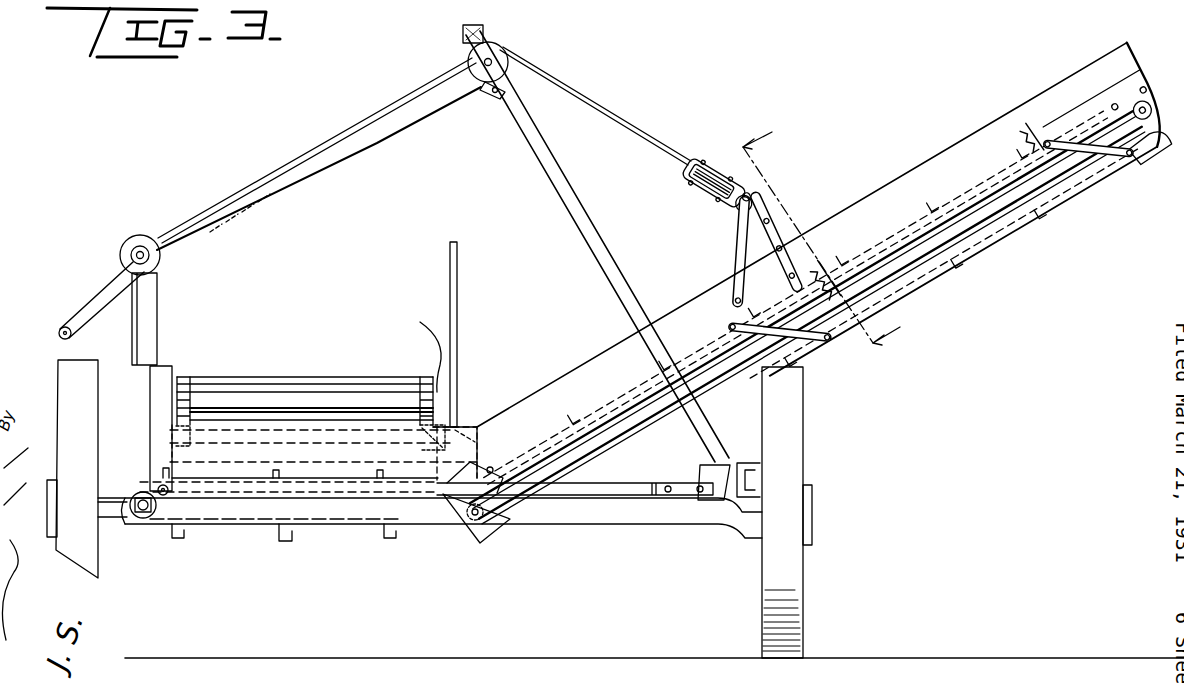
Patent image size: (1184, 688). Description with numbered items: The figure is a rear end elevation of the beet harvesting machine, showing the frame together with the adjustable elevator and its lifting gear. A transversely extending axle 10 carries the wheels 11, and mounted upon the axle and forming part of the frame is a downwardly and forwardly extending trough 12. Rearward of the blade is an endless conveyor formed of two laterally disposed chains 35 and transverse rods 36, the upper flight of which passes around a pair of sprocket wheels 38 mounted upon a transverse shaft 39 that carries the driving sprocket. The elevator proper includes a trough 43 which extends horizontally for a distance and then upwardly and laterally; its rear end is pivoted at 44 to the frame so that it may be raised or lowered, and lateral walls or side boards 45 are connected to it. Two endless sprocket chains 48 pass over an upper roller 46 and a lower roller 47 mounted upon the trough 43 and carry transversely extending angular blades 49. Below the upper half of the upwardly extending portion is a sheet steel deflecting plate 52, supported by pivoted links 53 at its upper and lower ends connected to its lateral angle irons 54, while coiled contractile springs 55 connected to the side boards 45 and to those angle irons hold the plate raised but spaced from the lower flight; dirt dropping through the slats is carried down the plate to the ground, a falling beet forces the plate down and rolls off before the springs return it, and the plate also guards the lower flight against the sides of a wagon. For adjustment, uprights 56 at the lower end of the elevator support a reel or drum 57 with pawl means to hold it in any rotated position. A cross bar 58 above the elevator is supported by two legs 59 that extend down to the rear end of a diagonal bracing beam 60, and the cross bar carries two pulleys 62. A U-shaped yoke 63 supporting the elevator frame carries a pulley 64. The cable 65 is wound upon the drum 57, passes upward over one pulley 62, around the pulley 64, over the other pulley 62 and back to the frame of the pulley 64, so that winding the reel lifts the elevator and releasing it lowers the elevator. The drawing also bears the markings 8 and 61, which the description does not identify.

The section line 8- 8 is at (813, 247).
The transversely extending axle 10 is at (120, 534).
The wheels 11 is at (787, 571).
The trough 12 is at (460, 326).
The chains 35 is at (416, 347).
The transverse rods 36 is at (350, 380).
The sprocket wheels 38 is at (196, 378).
The transverse shaft 39 is at (281, 406).
The elevator trough 43 is at (1108, 100).
The pivot 44 is at (160, 490).
The lateral walls 45 is at (876, 188).
The upper roller 46 is at (1118, 148).
The lower roller 47 is at (147, 526).
The endless sprocket chains 48 is at (359, 527).
The angular blades 49 is at (930, 205).
The deflecting plate 52 is at (986, 250).
The pivoted links 53 is at (768, 326).
The lateral angle irons 54 is at (968, 253).
The coiled contractile springs 55 is at (853, 273).
The uprights 56 is at (151, 296).
The reel or drum 57 is at (147, 234).
The cross bar 58 is at (484, 30).
The legs 59 is at (597, 233).
The diagonal bracing beam 60 is at (738, 478).
The rod 61 is at (383, 139).
The pulleys 62 is at (506, 58).
The U-shaped yoke 63 is at (745, 330).
The pulley 64 is at (713, 207).
The cable 65 is at (624, 124).